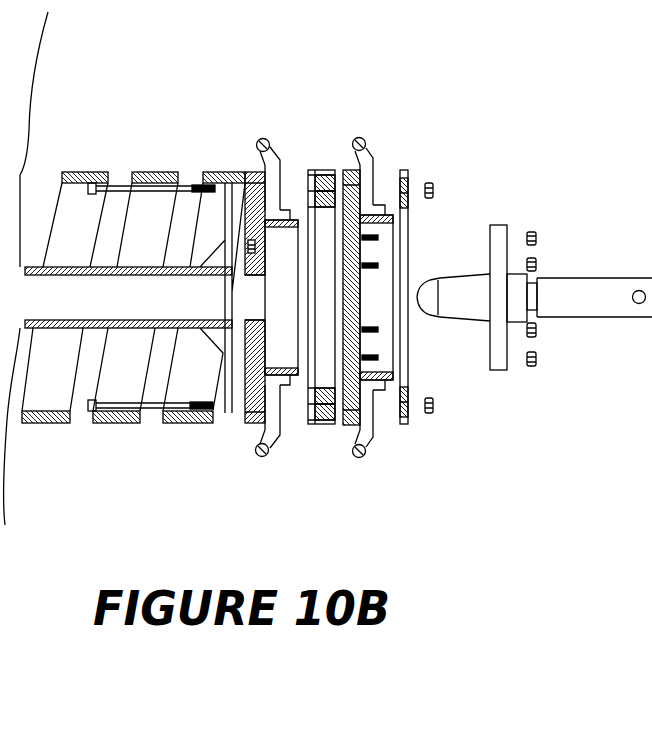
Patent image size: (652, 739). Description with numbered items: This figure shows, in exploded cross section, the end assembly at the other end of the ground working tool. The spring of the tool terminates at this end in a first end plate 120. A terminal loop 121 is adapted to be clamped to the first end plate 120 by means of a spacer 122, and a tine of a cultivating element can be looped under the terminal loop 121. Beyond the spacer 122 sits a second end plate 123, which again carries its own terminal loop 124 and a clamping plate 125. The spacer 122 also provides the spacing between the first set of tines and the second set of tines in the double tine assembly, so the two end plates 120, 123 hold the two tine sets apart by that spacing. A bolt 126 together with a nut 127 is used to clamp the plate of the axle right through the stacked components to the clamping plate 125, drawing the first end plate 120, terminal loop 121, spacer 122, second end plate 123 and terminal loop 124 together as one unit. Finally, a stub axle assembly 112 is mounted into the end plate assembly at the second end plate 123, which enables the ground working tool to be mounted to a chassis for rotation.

The stub axle assembly 112 is at (577, 302).
The first end plate 120 is at (247, 173).
The terminal loop 121 is at (262, 142).
The spacer 122 is at (317, 417).
The second end plate 123 is at (345, 173).
The terminal loop 124 is at (372, 157).
The clamping plate 125 is at (405, 183).
The bolt 126 is at (115, 185).
The nut 127 is at (434, 190).